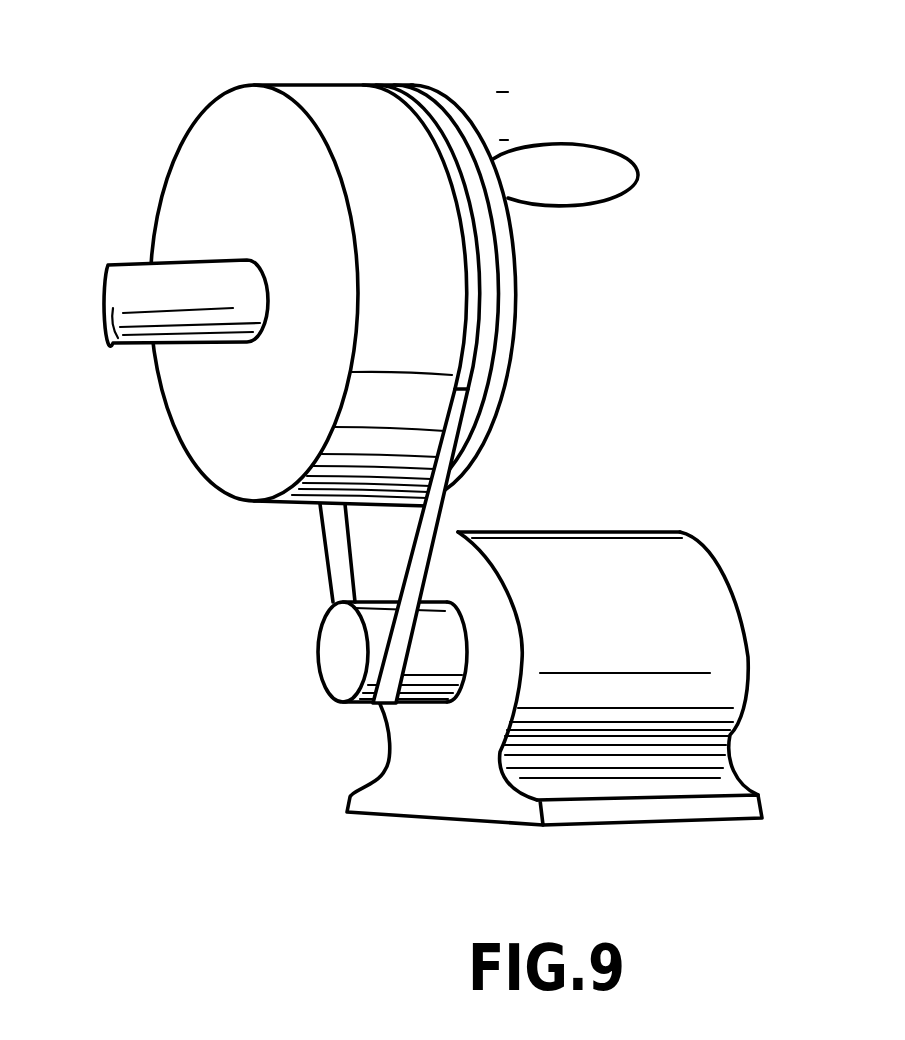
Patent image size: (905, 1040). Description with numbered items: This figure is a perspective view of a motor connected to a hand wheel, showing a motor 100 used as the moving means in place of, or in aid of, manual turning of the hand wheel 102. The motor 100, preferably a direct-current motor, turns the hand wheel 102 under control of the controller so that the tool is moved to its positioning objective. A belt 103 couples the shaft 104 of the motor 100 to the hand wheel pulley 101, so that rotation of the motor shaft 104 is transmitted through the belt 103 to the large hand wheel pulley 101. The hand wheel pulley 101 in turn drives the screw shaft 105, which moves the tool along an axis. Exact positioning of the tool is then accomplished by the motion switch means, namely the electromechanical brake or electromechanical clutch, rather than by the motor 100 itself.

The motor 100 is at (662, 528).
The hand wheel pulley 101 is at (347, 88).
The hand wheel 102 is at (606, 162).
The belt 103 is at (450, 498).
The shaft 104 is at (348, 680).
The screw shaft 105 is at (136, 262).